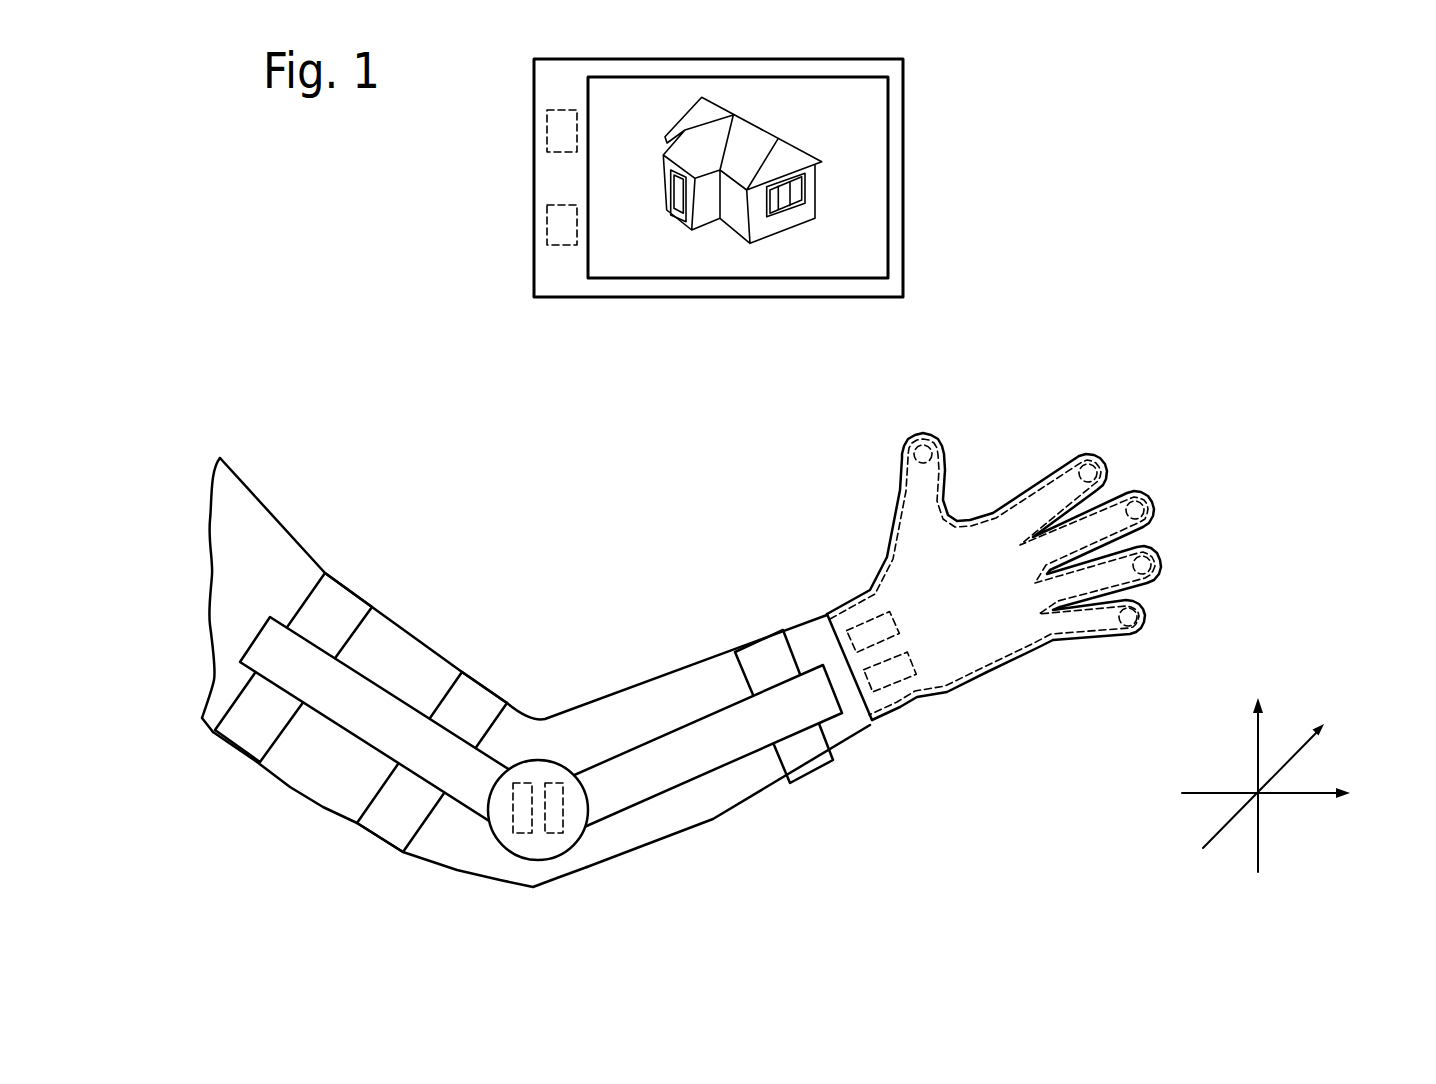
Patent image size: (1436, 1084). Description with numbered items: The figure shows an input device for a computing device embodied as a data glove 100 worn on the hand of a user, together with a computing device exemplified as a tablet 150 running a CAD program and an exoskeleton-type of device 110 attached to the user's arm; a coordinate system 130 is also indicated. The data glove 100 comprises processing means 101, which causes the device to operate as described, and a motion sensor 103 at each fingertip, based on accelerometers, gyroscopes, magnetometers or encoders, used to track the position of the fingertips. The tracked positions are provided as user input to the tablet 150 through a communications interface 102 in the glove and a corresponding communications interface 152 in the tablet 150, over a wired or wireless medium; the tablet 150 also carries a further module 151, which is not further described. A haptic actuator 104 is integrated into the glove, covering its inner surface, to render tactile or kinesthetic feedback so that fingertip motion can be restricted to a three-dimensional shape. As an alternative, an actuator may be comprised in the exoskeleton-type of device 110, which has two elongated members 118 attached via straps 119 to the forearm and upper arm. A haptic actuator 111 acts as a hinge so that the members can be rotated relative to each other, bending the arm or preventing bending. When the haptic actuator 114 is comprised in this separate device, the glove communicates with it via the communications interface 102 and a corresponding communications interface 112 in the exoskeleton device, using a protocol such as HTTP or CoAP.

The data glove 100 is at (989, 702).
The processing means 101 is at (892, 683).
The communications interface 102 is at (863, 623).
The motion sensor 103 is at (920, 445).
The haptic actuator 104 is at (1040, 650).
The exoskeleton-type of device 110 is at (412, 590).
The haptic actuator 111 is at (523, 783).
The communications interface 112 is at (553, 828).
The haptic actuator 114 is at (510, 857).
The elongated members 118 is at (353, 722).
The straps 119 is at (345, 598).
The coordinate system 130 is at (1178, 843).
The tablet 150 is at (932, 98).
The display sensor unit 151 is at (550, 134).
The communications interface 152 is at (550, 231).